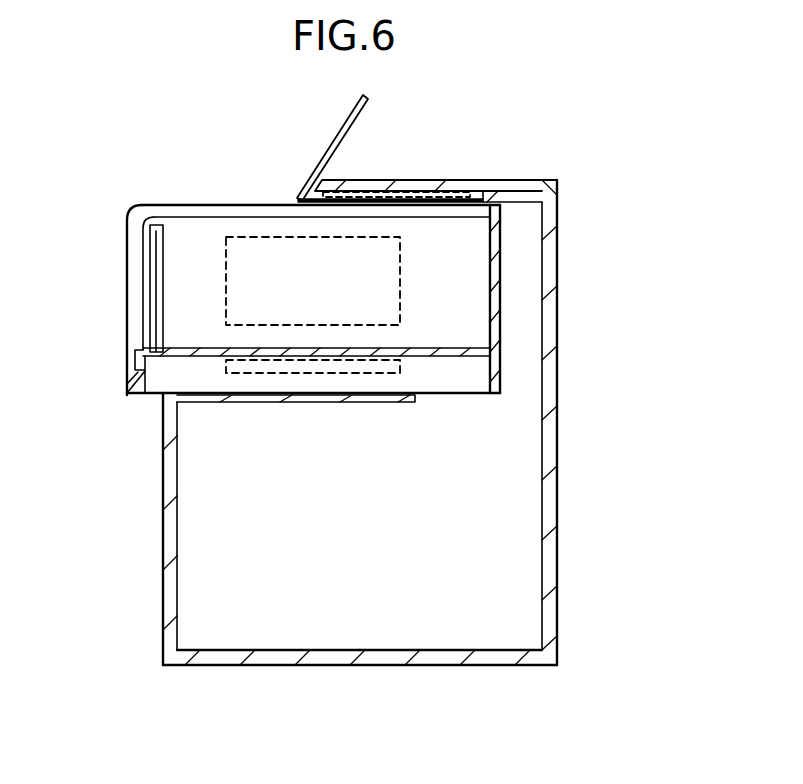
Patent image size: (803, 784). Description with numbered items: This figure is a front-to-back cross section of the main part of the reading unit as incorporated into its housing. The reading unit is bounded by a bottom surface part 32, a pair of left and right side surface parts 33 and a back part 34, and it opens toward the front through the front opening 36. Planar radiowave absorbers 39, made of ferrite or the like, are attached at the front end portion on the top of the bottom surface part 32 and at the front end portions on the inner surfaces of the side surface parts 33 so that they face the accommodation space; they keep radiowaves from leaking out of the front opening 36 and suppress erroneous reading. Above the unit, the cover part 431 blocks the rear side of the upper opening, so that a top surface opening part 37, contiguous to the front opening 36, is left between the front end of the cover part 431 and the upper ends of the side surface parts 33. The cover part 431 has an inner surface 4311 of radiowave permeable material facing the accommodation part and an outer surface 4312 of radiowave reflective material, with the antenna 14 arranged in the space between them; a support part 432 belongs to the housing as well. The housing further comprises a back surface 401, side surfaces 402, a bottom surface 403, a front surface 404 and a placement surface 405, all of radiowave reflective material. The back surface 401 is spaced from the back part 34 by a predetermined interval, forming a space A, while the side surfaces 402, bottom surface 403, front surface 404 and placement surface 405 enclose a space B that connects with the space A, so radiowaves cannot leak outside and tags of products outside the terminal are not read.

The antenna 14 is at (446, 193).
The bottom surface part 32 is at (201, 348).
The side surface part 33 is at (282, 274).
The back part 34 is at (490, 288).
The front opening 36 is at (127, 284).
The top surface opening part 37 is at (242, 205).
The radiowave absorber 39 is at (157, 225).
The back surface 401 is at (557, 246).
The side surface 402 is at (443, 628).
The bottom surface 403 is at (272, 666).
The front surface 404 is at (163, 528).
The placement surface 405 is at (317, 403).
The cover part 431 is at (377, 170).
The inner surface 4311 is at (517, 202).
The outer surface 4312 is at (424, 188).
The support part 432 is at (338, 133).
The space A is at (518, 289).
The space B is at (420, 572).